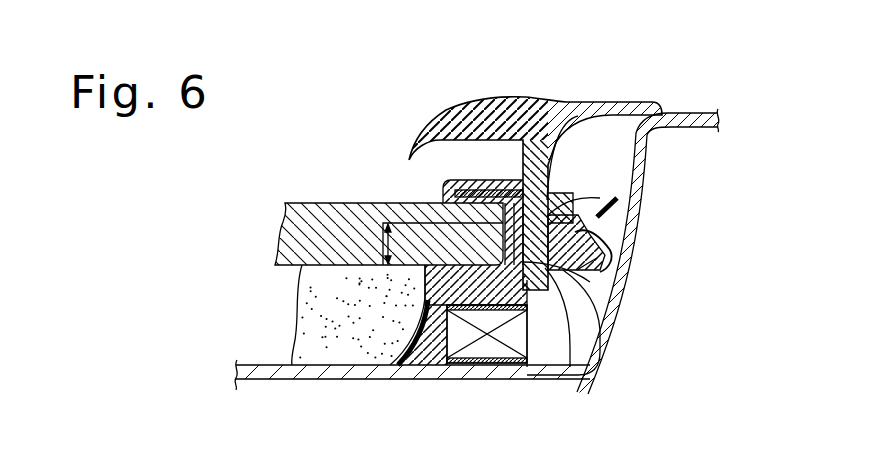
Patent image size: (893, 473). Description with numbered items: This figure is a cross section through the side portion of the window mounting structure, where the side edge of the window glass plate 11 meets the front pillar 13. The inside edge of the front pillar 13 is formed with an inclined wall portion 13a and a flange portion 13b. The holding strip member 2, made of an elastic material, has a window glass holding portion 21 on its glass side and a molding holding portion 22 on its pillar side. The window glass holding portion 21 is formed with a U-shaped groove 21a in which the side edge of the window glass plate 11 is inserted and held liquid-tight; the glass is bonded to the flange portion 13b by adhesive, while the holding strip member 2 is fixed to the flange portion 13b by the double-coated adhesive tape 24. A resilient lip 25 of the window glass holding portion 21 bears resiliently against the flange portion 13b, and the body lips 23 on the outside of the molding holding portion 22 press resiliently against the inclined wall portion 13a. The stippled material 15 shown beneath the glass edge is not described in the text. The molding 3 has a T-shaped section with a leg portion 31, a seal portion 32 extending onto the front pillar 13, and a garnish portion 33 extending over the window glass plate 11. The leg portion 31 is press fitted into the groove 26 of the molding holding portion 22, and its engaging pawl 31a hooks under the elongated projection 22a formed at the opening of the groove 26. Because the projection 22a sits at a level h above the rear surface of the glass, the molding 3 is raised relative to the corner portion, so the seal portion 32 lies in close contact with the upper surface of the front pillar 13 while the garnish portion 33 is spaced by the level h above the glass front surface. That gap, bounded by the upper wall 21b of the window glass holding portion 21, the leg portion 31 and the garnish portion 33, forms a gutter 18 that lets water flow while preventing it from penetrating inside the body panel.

The molding 3 is at (523, 76).
The garnish portion 33 is at (455, 108).
The seal portion 32 is at (600, 101).
The leg portion 31 is at (550, 187).
The engaging pawl 31a is at (601, 318).
The front pillar 13 is at (683, 113).
The inclined wall portion 13a is at (636, 173).
The flange portion 13b is at (267, 383).
The window glass plate 11 is at (314, 230).
The foam pad 15 is at (332, 306).
The gutter 18 is at (434, 167).
The holding strip member 2 is at (434, 189).
The window glass holding portion 21 is at (575, 377).
The U-shaped groove 21a is at (527, 368).
The upper wall 21b is at (472, 181).
The molding holding portion 22 is at (612, 292).
The elongated projection 22a is at (628, 198).
The body lips 23 is at (614, 264).
The double-coated adhesive tape 24 is at (487, 352).
The resilient lip 25 is at (418, 375).
The groove 26 is at (603, 350).
The level h is at (395, 244).